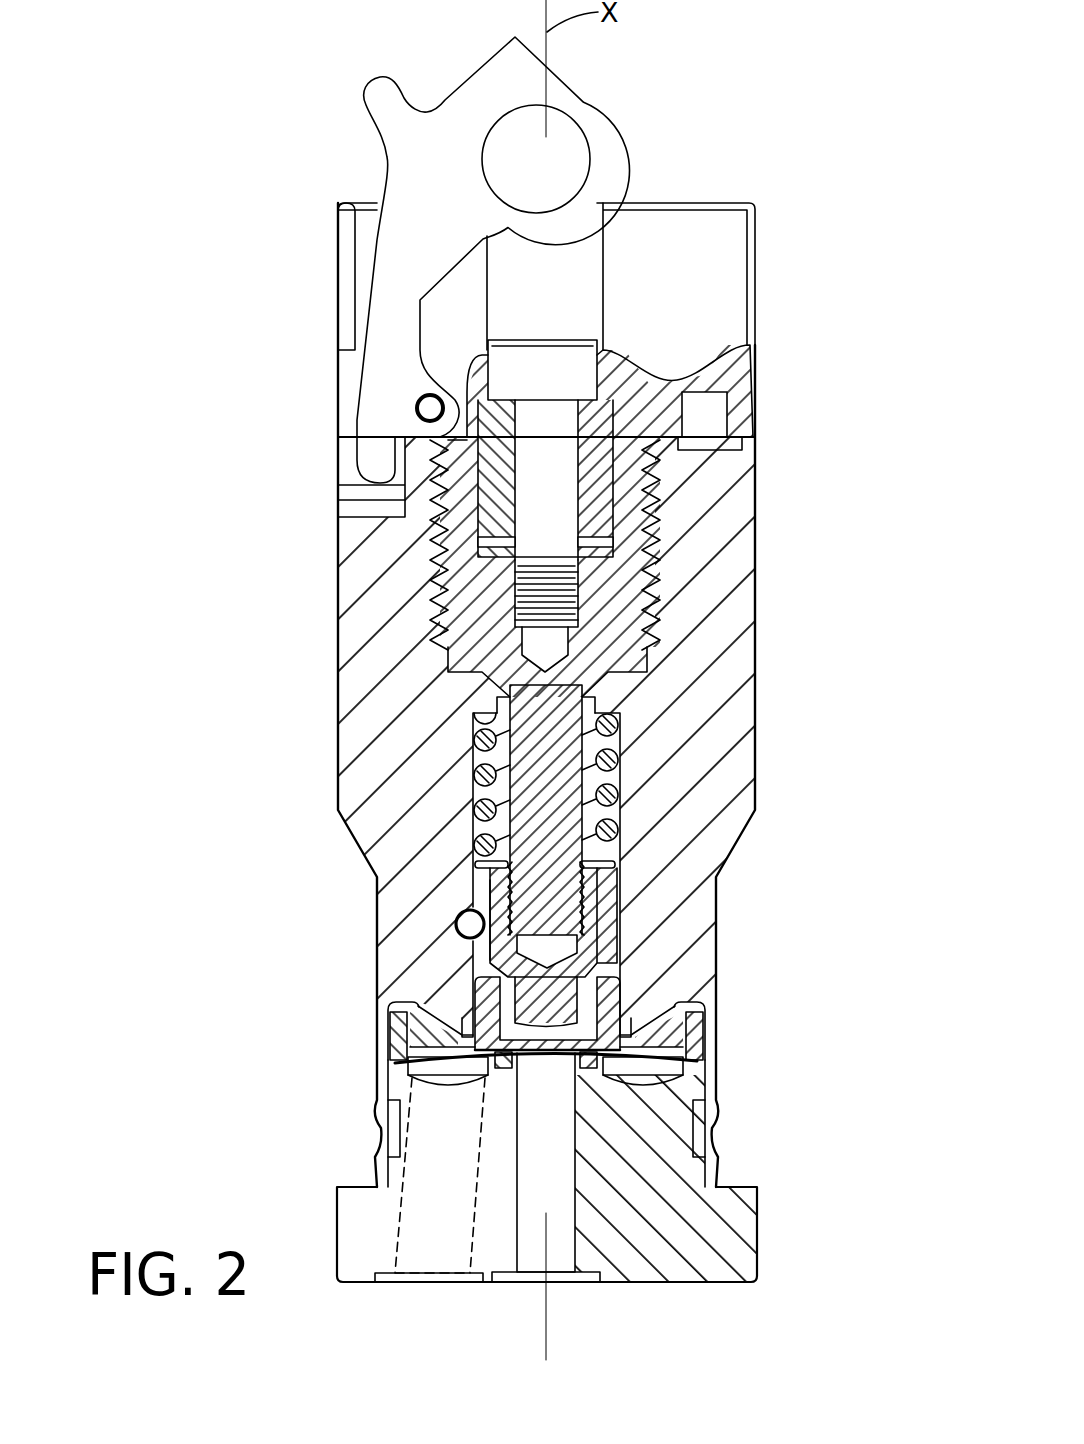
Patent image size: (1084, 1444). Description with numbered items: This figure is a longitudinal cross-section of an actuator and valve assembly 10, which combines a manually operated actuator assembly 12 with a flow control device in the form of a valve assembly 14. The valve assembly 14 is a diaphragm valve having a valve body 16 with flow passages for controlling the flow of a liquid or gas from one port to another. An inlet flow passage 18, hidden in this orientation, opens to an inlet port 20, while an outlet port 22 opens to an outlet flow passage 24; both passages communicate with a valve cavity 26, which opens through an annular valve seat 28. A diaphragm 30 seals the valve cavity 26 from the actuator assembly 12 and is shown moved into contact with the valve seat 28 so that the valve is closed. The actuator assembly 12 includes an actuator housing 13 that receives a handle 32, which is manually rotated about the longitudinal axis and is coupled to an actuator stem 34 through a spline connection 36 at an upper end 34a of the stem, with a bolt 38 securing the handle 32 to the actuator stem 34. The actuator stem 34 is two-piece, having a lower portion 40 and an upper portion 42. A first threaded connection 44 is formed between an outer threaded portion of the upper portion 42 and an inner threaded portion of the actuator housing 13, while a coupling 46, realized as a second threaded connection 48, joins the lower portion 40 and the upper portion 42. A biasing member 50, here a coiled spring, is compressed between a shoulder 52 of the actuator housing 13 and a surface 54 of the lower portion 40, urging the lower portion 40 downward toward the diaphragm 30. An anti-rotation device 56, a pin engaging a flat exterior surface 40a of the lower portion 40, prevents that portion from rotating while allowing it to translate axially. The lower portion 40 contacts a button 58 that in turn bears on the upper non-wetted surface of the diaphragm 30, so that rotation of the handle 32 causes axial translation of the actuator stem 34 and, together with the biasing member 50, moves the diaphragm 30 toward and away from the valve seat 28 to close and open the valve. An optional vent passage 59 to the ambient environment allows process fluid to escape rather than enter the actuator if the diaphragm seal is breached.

The actuator and valve assembly 10 is at (789, 181).
The actuator assembly 12 is at (238, 786).
The actuator housing 13 is at (745, 530).
The valve assembly 14 is at (238, 1074).
The valve body 16 is at (670, 1173).
The inlet flow passage 18 is at (398, 1220).
The inlet port 20 is at (420, 1275).
The outlet port 22 is at (562, 1285).
The outlet flow passage 24 is at (578, 1172).
The valve cavity 26 is at (693, 1063).
The valve seat 28 is at (515, 1066).
The diaphragm 30 is at (628, 1060).
The handle 32 is at (754, 325).
The actuator stem 34 is at (704, 630).
The upper end of the actuator stem 34a is at (463, 425).
The spline connection 36 is at (605, 470).
The bolt 38 is at (557, 360).
The lower portion of the actuator stem 40 is at (593, 945).
The flat exterior surface 40a is at (493, 950).
The upper portion of the actuator stem 42 is at (453, 633).
The first threaded connection 44 is at (416, 573).
The coupling 46 is at (476, 882).
The second threaded connection 48 is at (527, 870).
The biasing member 50 is at (462, 764).
The shoulder 52 is at (618, 727).
The surface 54 is at (605, 858).
The anti-rotation device 56 is at (455, 925).
The button 58 is at (625, 1005).
The vent passage 59 is at (707, 1048).